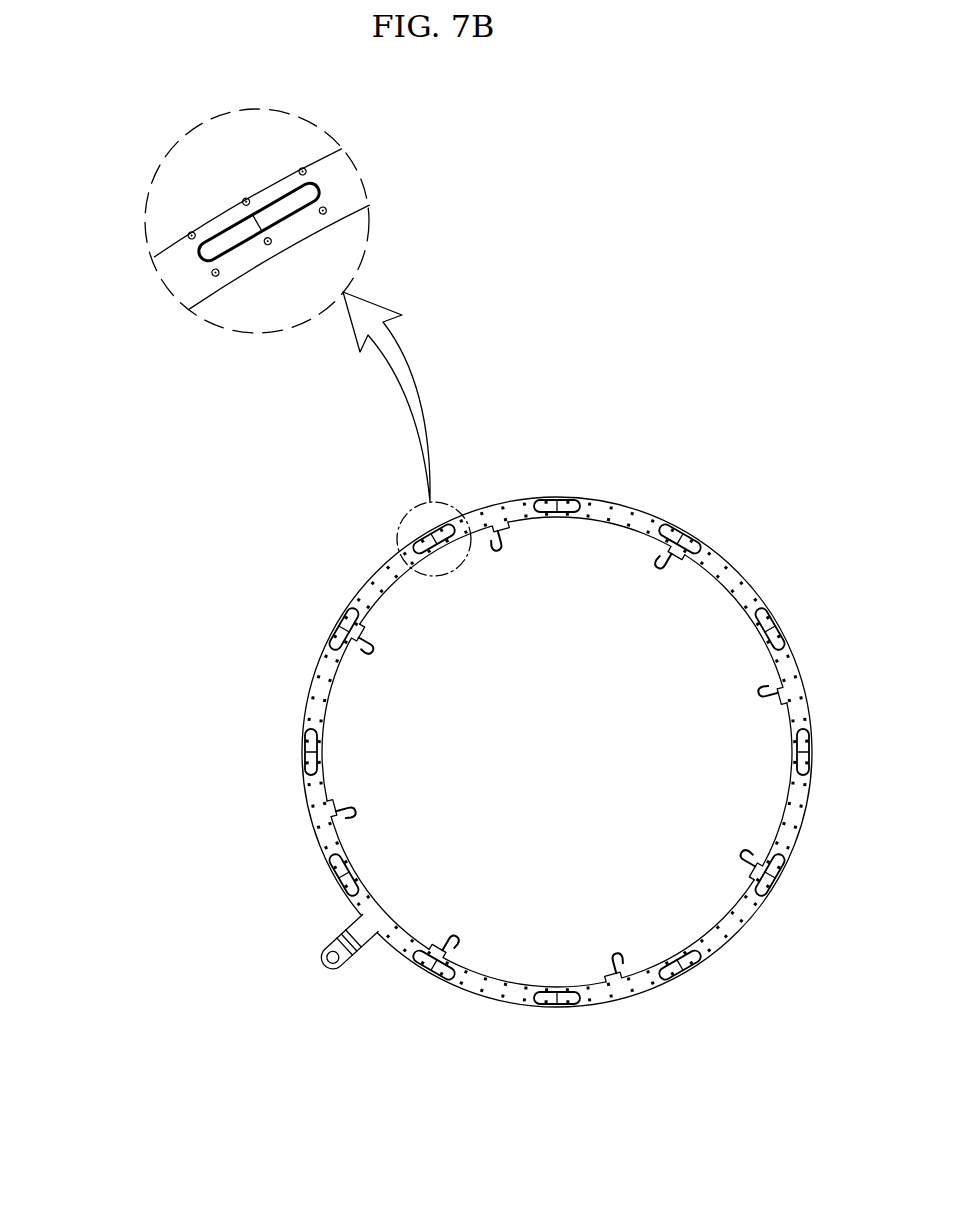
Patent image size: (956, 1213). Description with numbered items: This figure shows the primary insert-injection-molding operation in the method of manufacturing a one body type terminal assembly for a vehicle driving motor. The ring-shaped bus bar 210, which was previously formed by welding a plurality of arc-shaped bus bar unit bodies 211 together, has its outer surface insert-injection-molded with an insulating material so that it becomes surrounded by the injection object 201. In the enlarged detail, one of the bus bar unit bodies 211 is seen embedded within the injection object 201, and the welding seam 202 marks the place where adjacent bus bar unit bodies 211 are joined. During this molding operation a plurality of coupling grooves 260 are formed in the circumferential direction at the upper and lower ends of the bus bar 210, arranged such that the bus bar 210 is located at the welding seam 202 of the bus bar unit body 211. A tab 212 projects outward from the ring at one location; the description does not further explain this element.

The bus bar 210 is at (612, 477).
The connection tab 212 is at (370, 947).
The bus bar unit body 211 is at (293, 204).
The injection object 201 is at (178, 266).
The welding seam 202 is at (262, 222).
The coupling groove 260 is at (214, 233).